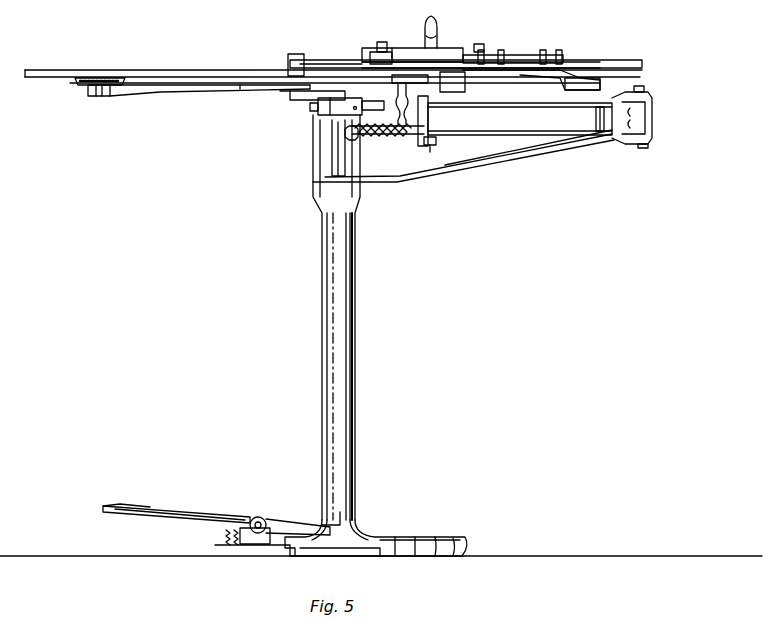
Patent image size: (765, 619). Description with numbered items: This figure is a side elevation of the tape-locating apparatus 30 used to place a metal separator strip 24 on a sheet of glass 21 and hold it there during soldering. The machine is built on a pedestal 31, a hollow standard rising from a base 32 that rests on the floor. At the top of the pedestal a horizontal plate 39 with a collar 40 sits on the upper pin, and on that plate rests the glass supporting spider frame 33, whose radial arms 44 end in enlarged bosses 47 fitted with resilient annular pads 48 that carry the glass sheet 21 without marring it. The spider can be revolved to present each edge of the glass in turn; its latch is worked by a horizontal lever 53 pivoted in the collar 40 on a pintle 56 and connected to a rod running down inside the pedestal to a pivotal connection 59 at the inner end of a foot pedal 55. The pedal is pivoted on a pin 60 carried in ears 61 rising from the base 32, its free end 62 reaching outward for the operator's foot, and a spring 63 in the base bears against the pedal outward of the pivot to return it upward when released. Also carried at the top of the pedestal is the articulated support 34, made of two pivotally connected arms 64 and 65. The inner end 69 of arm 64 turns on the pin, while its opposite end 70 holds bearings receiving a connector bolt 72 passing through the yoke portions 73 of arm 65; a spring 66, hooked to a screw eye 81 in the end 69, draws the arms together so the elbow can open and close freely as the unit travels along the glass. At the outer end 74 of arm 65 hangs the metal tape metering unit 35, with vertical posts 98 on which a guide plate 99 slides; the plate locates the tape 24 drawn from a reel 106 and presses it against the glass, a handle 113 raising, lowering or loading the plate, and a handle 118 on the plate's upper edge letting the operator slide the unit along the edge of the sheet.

The sheet of glass 21 is at (150, 70).
The metal separator strip 24 is at (326, 62).
The apparatus 30 is at (262, 170).
The pedestal 31 is at (352, 310).
The base 32 is at (398, 537).
The glass supporting spider frame 33 is at (244, 92).
The articulated support 34 is at (476, 154).
The metal tape metering unit 35 is at (448, 52).
The horizontal plate 39 is at (298, 94).
The collar 40 is at (330, 106).
The arms 44 is at (178, 90).
The enlarged boss 47 is at (98, 97).
The annular pad 48 is at (80, 84).
The horizontal lever 53 is at (378, 110).
The foot pedal 55 is at (196, 509).
The pintle 56 is at (334, 364).
The pivotal connection 59 is at (356, 516).
The pin 60 is at (268, 516).
The ears 61 is at (258, 516).
The free end 62 is at (140, 505).
The spring 63 is at (226, 537).
The arm 64 is at (528, 156).
The arm 65 is at (572, 120).
The spring 66 is at (366, 150).
The end of arm 64 69 is at (322, 160).
The opposite end of arm 64 70 is at (650, 116).
The connector bolt 72 is at (642, 87).
The yoke portions 73 is at (647, 96).
The outer end of arm 65 74 is at (431, 153).
The screw eye 81 is at (346, 134).
The vertical posts 98 is at (380, 44).
The guide plate 99 is at (409, 56).
The reel 106 is at (514, 60).
The handle 113 is at (403, 112).
The handle 118 is at (424, 24).